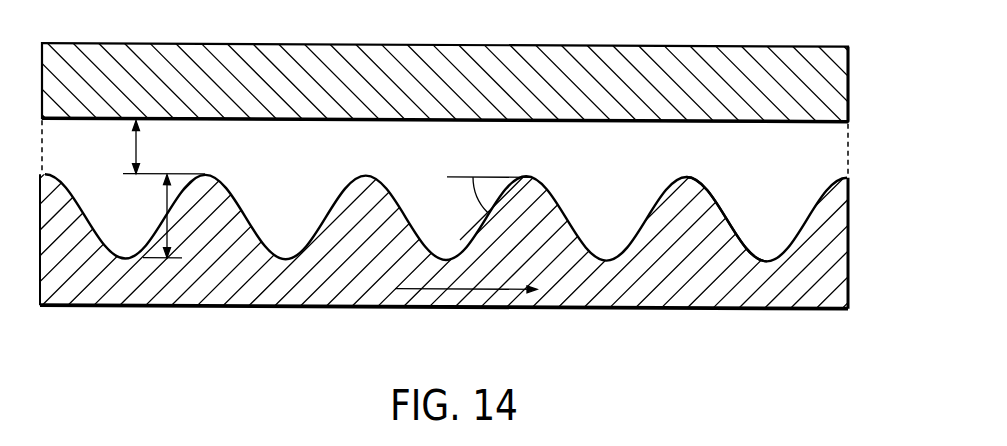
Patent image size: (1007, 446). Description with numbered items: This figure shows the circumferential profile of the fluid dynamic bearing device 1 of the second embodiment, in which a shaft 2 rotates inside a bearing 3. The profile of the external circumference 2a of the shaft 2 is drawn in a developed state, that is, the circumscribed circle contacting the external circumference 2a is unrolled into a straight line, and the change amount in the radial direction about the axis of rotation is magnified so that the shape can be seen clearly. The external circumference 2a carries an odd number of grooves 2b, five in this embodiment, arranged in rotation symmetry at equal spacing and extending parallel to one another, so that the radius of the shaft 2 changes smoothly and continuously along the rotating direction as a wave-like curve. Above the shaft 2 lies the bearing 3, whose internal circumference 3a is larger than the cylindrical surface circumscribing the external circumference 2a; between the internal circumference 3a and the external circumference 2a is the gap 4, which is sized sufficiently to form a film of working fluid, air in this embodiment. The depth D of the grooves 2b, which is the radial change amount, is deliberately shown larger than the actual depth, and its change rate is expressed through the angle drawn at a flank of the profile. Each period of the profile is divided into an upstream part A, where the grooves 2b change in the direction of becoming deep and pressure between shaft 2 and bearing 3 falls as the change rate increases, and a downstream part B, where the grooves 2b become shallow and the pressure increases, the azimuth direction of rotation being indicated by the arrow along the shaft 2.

The fluid dynamic bearing device 1 is at (496, 183).
The shaft 2 is at (712, 307).
The external circumference 2a is at (707, 180).
The grooves 2b is at (98, 238).
The bearing 3 is at (557, 62).
The internal circumference 3a is at (427, 118).
The gap 4 is at (164, 147).
The upstream part A is at (179, 152).
The downstream part B is at (68, 175).
The depth of the groove D is at (167, 216).